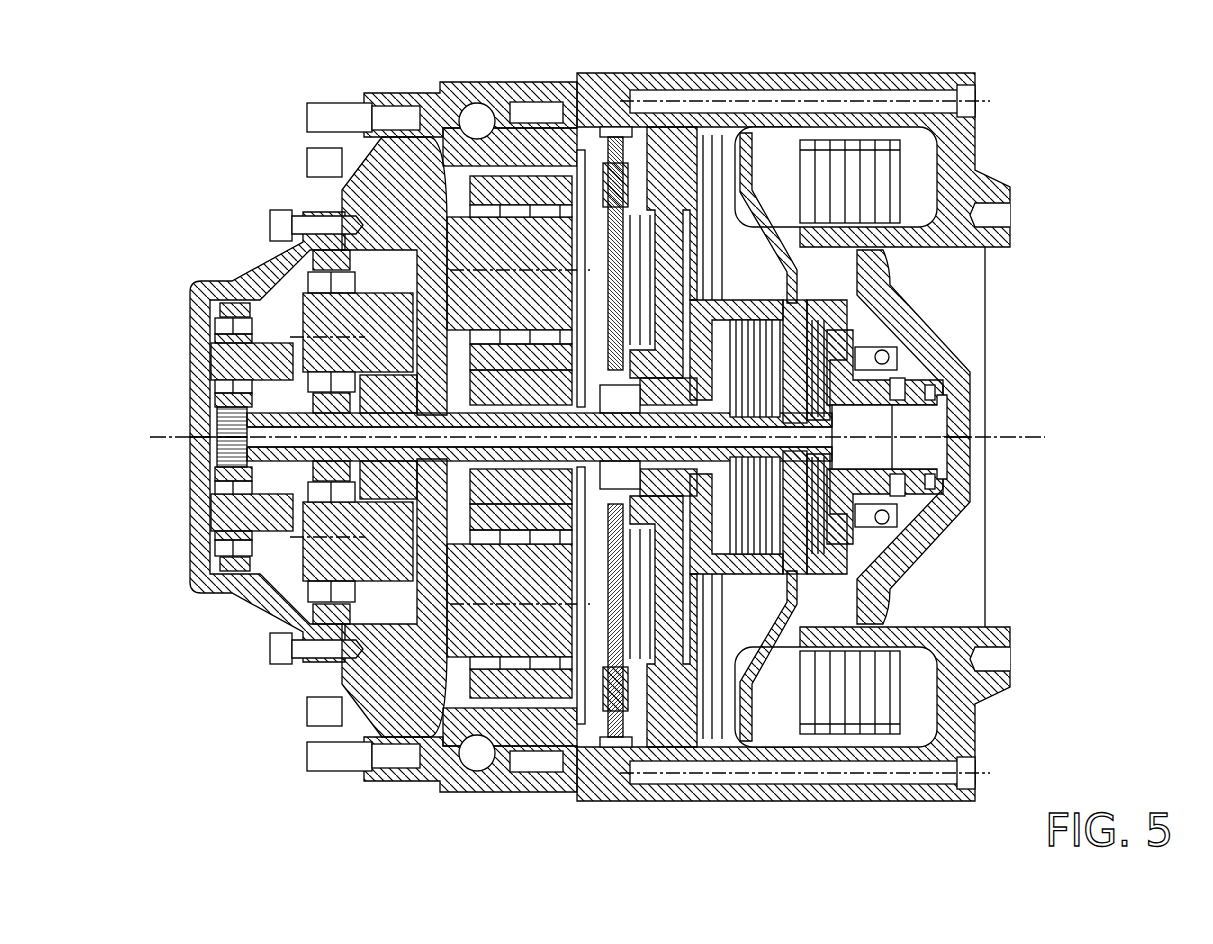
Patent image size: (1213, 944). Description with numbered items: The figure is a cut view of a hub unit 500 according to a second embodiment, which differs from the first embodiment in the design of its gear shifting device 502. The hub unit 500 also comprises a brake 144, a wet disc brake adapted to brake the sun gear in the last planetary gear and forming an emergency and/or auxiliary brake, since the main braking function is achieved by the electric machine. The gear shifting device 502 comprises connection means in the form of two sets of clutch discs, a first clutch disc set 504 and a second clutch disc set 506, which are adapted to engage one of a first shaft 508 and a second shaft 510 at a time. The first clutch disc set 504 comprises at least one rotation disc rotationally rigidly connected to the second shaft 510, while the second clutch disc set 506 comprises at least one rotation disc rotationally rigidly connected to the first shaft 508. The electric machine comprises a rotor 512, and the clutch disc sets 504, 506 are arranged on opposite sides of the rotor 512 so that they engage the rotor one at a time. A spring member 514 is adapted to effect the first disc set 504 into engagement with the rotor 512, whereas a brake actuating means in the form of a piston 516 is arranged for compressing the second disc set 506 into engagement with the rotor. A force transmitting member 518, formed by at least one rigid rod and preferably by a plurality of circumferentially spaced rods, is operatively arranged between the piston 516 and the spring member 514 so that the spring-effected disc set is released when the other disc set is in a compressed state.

The hub unit 500 is at (666, 443).
The brake 144 is at (617, 802).
The gear shifting device 502 is at (718, 265).
The first clutch disc set 504 is at (752, 298).
The second clutch disc set 506 is at (818, 298).
The first shaft 508 is at (686, 457).
The second shaft 510 is at (718, 520).
The rotor 512 is at (805, 580).
The spring member 514 is at (673, 82).
The piston 516 is at (858, 395).
The force transmitting member 518 is at (847, 332).